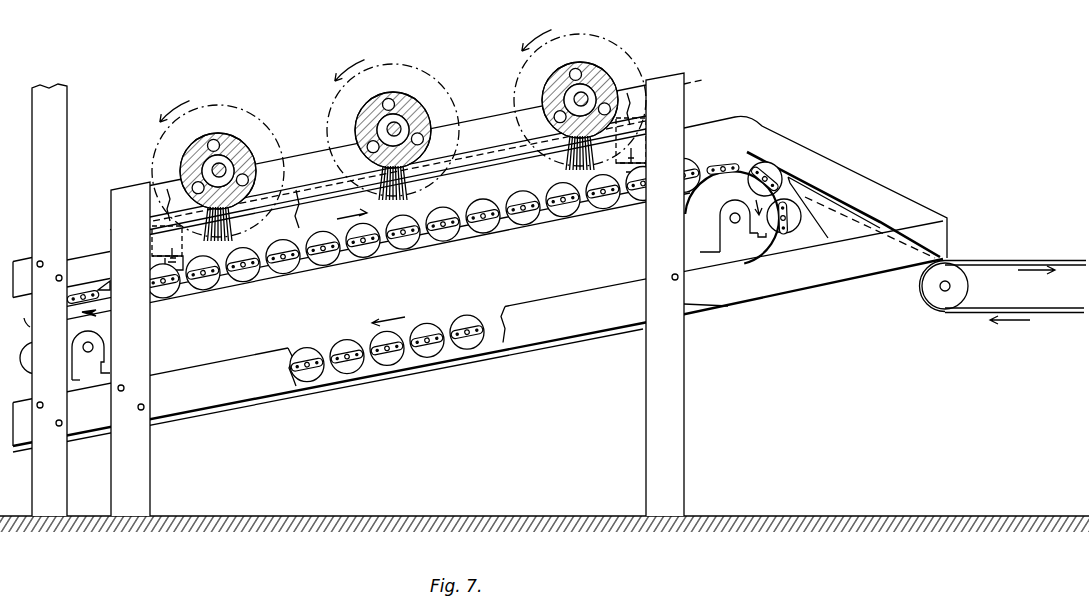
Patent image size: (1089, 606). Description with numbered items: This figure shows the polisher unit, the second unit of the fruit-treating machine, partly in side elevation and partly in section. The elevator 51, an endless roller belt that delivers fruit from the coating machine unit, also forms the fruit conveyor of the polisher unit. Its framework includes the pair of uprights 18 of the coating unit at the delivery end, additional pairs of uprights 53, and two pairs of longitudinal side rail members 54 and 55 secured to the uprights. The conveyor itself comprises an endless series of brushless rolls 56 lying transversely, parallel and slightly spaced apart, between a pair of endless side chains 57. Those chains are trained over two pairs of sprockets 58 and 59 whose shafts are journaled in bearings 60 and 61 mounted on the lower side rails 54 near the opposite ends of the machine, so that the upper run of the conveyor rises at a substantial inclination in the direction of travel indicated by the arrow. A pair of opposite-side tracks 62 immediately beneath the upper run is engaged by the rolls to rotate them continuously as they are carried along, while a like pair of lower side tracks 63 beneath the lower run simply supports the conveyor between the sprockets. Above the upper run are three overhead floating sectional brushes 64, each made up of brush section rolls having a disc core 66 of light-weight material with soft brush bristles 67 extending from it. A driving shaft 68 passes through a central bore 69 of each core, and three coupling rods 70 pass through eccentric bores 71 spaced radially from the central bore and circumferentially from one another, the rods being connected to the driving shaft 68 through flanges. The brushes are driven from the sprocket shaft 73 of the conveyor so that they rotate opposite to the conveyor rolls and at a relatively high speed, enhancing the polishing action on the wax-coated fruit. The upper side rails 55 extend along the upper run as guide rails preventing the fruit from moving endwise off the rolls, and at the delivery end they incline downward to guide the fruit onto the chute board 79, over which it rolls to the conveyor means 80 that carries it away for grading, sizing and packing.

The uprights 18 is at (42, 128).
The elevator 51 is at (301, 292).
The uprights 53 is at (150, 446).
The lower side rail members 54 is at (201, 368).
The upper side rail members 55 is at (302, 202).
The brushless rolls 56 is at (349, 329).
The endless side chains 57 is at (190, 296).
The sprockets 58 is at (80, 322).
The sprockets 59 is at (744, 196).
The bearings 60 is at (97, 366).
The bearings 61 is at (720, 232).
The opposite-side tracks 62 is at (344, 265).
The lower side tracks 63 is at (391, 372).
The overhead floating sectional brushes 64 is at (399, 130).
The disc core 66 is at (254, 143).
The brush bristles 67 is at (554, 170).
The driving shaft 68 is at (216, 133).
The central bore 69 is at (226, 163).
The coupling rods 70 is at (249, 177).
The eccentric bores 71 is at (152, 190).
The sprocket shaft 73 is at (97, 344).
The chute board 79 is at (835, 198).
The conveyor means 80 is at (1000, 261).